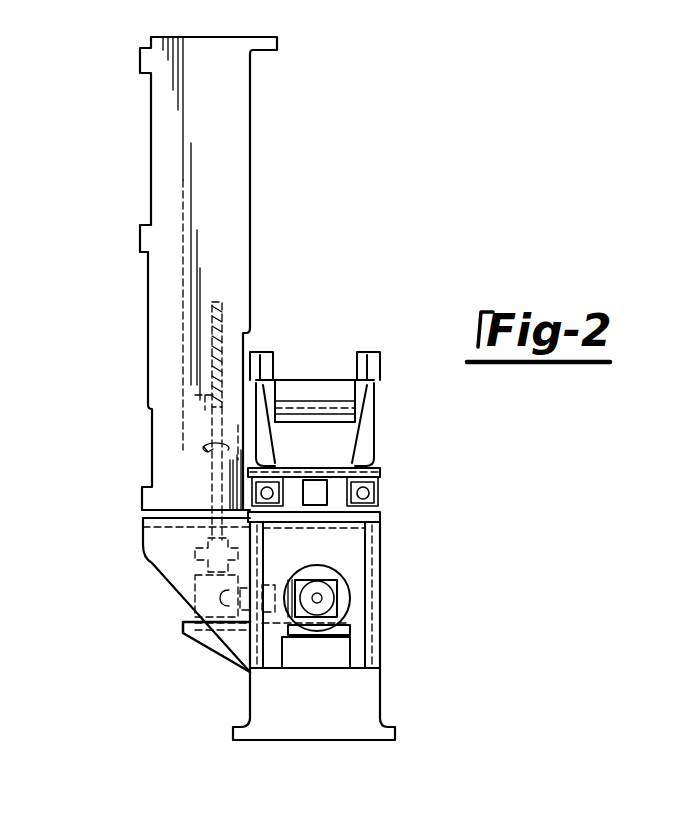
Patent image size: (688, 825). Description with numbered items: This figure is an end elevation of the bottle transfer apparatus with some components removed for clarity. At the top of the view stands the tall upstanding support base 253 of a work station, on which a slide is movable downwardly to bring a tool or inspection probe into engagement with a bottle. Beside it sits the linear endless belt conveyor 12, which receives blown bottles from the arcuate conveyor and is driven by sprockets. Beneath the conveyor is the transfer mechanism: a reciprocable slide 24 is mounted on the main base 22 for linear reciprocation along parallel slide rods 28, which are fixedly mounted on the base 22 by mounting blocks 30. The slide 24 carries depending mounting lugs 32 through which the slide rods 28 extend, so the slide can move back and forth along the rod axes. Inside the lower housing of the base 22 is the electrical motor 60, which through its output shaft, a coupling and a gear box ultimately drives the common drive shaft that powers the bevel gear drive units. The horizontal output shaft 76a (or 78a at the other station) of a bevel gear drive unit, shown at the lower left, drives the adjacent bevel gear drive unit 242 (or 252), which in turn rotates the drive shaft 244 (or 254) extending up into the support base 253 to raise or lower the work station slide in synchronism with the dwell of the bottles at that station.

The upstanding support base 253 is at (195, 103).
The drive shaft 244 is at (116, 384).
The drive shaft 254 is at (210, 412).
The linear endless belt conveyor 12 is at (318, 378).
The reciprocable slide 24 is at (380, 481).
The slide rods 28 is at (260, 488).
The depending mounting lugs 32 is at (330, 488).
The mounting blocks 30 is at (262, 510).
The main base 22 is at (372, 692).
The electrical motor 60 is at (345, 599).
The bevel gear drive unit 242 is at (152, 590).
The bevel gear drive unit 252 is at (198, 600).
The horizontal output shaft 76a is at (175, 672).
The horizontal output shaft 78a is at (232, 660).